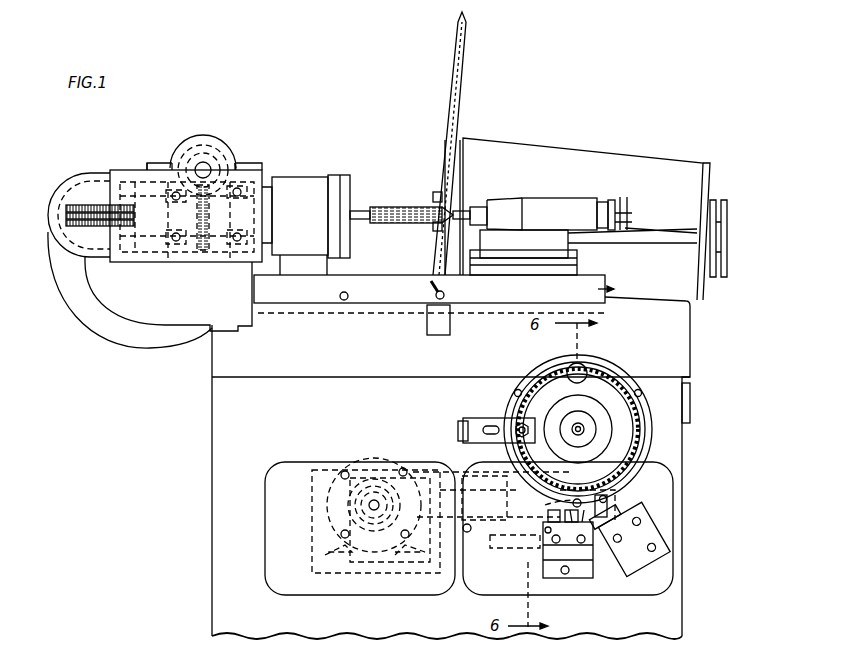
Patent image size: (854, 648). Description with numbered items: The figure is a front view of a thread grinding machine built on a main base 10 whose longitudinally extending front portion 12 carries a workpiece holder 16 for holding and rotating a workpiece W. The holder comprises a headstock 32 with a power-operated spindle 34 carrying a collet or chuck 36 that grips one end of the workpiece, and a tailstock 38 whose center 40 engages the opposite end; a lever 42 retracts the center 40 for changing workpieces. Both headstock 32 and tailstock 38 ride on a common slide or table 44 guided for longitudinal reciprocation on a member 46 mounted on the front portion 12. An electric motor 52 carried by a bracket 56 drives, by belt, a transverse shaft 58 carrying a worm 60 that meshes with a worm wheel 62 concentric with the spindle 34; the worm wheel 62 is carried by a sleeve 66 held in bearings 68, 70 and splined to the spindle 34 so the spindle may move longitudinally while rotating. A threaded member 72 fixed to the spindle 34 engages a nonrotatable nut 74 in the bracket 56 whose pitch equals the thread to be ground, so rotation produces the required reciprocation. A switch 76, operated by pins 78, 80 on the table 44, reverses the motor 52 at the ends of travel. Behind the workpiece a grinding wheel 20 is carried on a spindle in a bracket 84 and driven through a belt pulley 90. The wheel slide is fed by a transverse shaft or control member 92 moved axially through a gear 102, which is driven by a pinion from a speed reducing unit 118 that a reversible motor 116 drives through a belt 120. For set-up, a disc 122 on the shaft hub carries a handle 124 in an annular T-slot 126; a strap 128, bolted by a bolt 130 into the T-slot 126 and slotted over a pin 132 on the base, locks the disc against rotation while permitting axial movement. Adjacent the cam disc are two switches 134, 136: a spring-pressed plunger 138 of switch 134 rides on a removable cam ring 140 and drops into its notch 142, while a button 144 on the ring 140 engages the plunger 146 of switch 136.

The main base 10 is at (686, 447).
The front portion 12 is at (396, 414).
The workpiece holder 16 is at (339, 175).
The cutting tool 20 is at (455, 75).
The headstock 32 is at (302, 184).
The spindle 34 is at (262, 175).
The collet or chuck 36 is at (351, 185).
The tailstock 38 is at (564, 210).
The center 40 is at (458, 205).
The lever 42 is at (622, 243).
The slide or table 44 is at (398, 274).
The member 46 is at (420, 365).
The electric motor 52 is at (52, 262).
The bracket 56 is at (148, 312).
The transverse shaft 58 is at (203, 162).
The worm 60 is at (218, 142).
The worm wheel 62 is at (174, 164).
The sleeve 66 is at (238, 165).
The bearing 68 is at (180, 252).
The bearing 70 is at (236, 256).
The threaded member 72 is at (72, 180).
The nut 74 is at (104, 176).
The switch 76 is at (452, 335).
The pin 78 is at (349, 295).
The pin 80 is at (446, 293).
The bracket 84 is at (582, 160).
The belt pulley 90 is at (728, 228).
The shaft or control member 92 is at (596, 420).
The gear 102 is at (615, 395).
The reversible motor 116 is at (385, 462).
The speed reducing unit 118 is at (501, 512).
The belt 120 is at (462, 470).
The disc 122 is at (643, 428).
The handle 124 is at (584, 366).
The T-slot 126 is at (540, 381).
The strap 128 is at (495, 418).
The bolt 130 is at (529, 423).
The pin 132 is at (464, 428).
The switch 134 is at (560, 566).
The switch 136 is at (625, 550).
The plunger 138 is at (555, 527).
The cam ring 140 is at (653, 440).
The notch 142 is at (620, 500).
The button 144 is at (610, 515).
The plunger 146 is at (607, 520).
The workpiece W is at (380, 208).